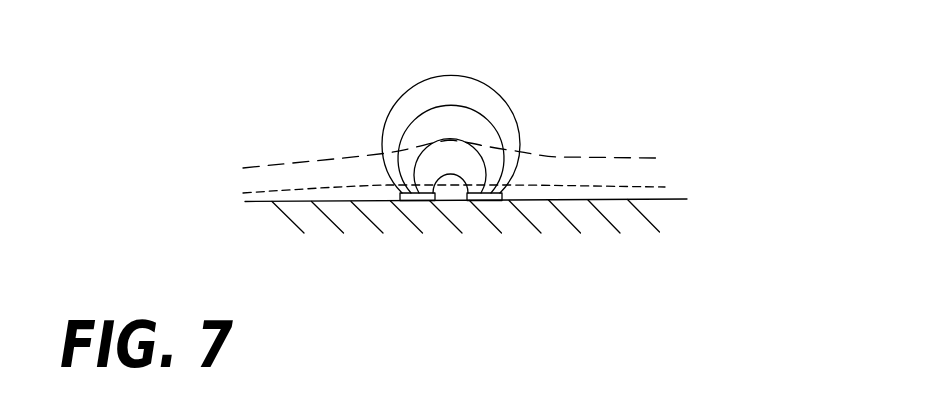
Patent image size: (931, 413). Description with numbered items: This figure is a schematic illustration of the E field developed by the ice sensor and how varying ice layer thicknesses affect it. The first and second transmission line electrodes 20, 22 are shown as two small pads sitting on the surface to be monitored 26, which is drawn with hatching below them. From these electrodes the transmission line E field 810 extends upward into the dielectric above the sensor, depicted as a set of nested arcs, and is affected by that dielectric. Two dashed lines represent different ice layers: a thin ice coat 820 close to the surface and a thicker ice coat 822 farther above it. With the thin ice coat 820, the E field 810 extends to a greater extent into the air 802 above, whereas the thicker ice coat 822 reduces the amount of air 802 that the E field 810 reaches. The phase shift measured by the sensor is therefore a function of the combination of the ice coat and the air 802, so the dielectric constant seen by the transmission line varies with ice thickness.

The air 802 is at (318, 58).
The transmission line E field 810 is at (478, 82).
The thicker ice coat 822 is at (642, 158).
The thin ice coat 820 is at (633, 187).
The surface to be monitored 26 is at (665, 199).
The first transmission line electrode 20 is at (412, 202).
The second transmission line electrode 22 is at (493, 202).